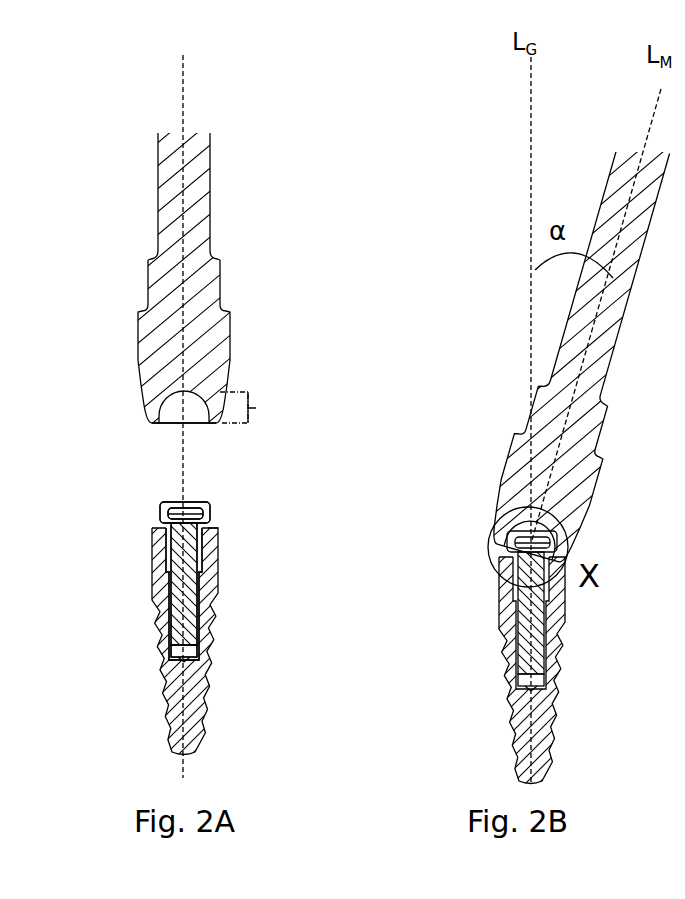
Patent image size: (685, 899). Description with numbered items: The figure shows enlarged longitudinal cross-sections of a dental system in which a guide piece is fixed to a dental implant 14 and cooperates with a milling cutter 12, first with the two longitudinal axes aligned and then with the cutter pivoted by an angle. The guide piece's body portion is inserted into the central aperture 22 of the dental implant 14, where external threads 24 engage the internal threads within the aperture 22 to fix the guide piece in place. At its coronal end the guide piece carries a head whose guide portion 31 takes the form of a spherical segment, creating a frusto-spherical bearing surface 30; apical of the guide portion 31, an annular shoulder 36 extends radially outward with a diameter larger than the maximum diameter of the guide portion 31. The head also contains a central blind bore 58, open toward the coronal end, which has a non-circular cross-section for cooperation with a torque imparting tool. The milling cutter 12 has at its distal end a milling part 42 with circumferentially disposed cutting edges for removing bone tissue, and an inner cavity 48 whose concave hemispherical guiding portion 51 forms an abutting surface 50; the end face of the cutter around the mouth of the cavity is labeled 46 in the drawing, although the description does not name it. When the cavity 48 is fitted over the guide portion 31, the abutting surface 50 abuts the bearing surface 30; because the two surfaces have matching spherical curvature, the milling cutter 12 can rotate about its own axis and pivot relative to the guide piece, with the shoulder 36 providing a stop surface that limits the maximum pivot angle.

In FIG. 2A, the milling cutter 12 is at (268, 307).
In FIG. 2B, the milling cutter 12 is at (513, 297).
In FIG. 2A, the dental implant 14 is at (254, 635).
In FIG. 2B, the dental implant 14 is at (476, 624).
In FIG. 2A, the central aperture 22 is at (203, 562).
In FIG. 2A, the external threads 24 is at (170, 611).
In FIG. 2A, the bearing surface 30 is at (163, 505).
In FIG. 2A, the guide portion 31 is at (251, 517).
In FIG. 2A, the annular shoulder 36 is at (213, 533).
In FIG. 2A, the milling part 42 is at (146, 366).
In FIG. 2A, the end face 46 is at (220, 425).
In FIG. 2A, the inner cavity 48 is at (178, 413).
In FIG. 2A, the abutting surface 50 is at (200, 394).
In FIG. 2A, the concave hemispherical guiding portion 51 is at (262, 410).
In FIG. 2A, the central blind bore 58 is at (172, 510).